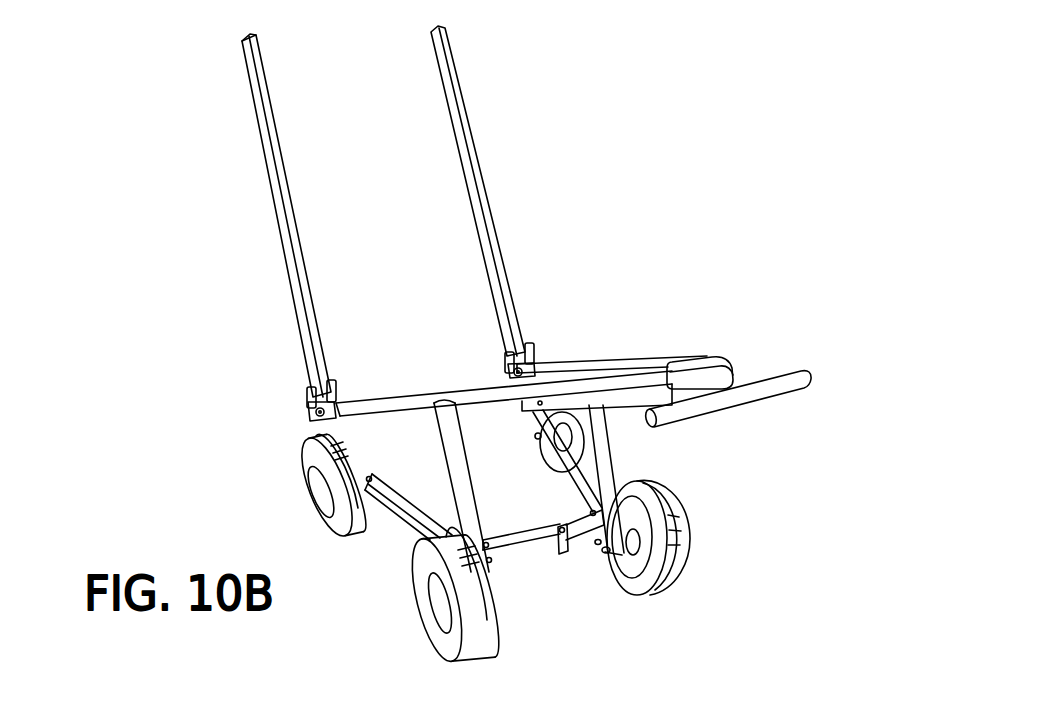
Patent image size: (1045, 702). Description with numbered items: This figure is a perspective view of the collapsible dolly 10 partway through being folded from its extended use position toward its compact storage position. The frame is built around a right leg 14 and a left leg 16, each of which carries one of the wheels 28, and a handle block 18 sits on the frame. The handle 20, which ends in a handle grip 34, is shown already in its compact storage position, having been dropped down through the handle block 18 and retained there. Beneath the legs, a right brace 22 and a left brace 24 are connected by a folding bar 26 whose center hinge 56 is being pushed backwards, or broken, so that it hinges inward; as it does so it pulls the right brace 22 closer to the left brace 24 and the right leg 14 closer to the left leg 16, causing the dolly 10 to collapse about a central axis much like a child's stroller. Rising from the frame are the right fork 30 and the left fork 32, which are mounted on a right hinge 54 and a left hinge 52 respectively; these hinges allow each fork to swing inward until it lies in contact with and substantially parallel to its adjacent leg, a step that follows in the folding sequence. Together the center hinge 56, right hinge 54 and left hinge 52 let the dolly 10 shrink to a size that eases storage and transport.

The collapsible dolly 10 is at (640, 106).
The right leg 14 is at (598, 362).
The left leg 16 is at (475, 393).
The handle block 18 is at (724, 370).
The handle 20 is at (621, 421).
The right brace 22 is at (546, 462).
The left brace 24 is at (414, 508).
The folding bar 26 is at (505, 536).
The wheels 28 is at (423, 562).
The right fork 30 is at (477, 202).
The left fork 32 is at (280, 235).
The handle grip 34 is at (744, 402).
The left hinge 52 is at (312, 421).
The right hinge 54 is at (523, 361).
The center hinge 56 is at (559, 555).